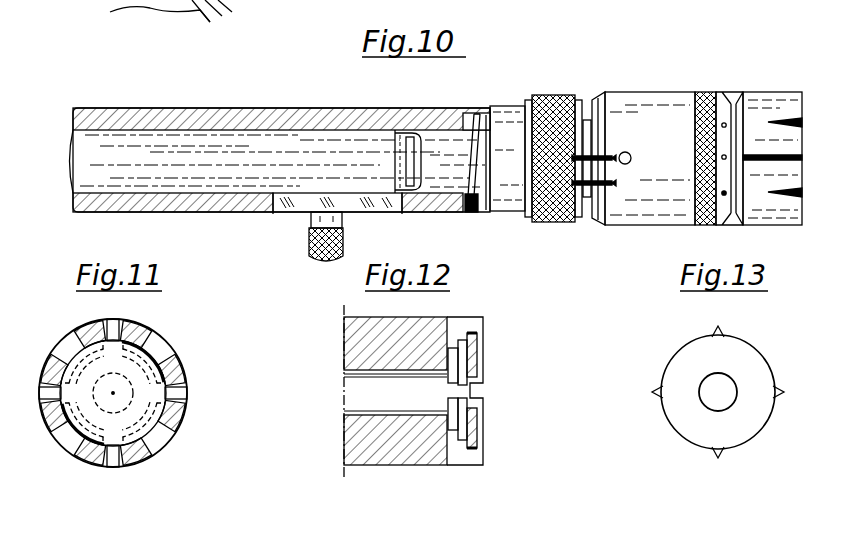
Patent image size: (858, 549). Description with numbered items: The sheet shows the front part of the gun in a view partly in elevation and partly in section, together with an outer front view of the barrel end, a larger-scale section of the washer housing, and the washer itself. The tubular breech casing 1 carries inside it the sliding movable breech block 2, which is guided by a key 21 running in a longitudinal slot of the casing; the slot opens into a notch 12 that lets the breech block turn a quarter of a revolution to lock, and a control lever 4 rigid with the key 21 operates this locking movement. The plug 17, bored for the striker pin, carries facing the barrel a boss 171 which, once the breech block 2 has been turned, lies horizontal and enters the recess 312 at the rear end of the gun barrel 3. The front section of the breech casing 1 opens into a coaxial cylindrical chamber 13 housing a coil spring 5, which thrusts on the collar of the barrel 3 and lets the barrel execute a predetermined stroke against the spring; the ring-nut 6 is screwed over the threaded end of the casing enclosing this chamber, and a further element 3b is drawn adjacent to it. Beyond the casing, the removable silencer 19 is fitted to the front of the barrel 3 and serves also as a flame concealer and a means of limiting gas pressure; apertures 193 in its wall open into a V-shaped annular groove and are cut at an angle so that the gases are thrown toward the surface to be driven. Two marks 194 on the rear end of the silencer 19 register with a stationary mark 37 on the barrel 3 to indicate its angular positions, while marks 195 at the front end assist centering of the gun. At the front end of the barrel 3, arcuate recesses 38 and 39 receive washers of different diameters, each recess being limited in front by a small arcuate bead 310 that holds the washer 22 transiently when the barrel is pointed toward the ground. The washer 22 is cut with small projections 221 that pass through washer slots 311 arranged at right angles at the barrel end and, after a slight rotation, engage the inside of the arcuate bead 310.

In FIG. 10, the tubular breech casing 1 is at (142, 130).
In FIG. 10, the movable breech block 2 is at (90, 168).
In FIG. 10, the notch 12 is at (336, 214).
In FIG. 10, the key 21 is at (350, 206).
In FIG. 10, the control lever 4 is at (309, 248).
In FIG. 10, the plug 17 is at (405, 138).
In FIG. 10, the boss 171 is at (414, 150).
In FIG. 10, the gun barrel 3 is at (443, 135).
In FIG. 10, the coaxial cylindrical chamber 13 is at (476, 116).
In FIG. 10, the recess 312 is at (415, 190).
In FIG. 10, the coil spring 5 is at (471, 206).
In FIG. 10, the ring-nut 6 is at (552, 96).
In FIG. 10, the spindle end plate 3b is at (587, 120).
In FIG. 10, the stationary mark 37 is at (592, 190).
In FIG. 10, the marks 194 is at (600, 186).
In FIG. 10, the removable silencer 19 is at (664, 206).
In FIG. 10, the apertures 193 is at (727, 200).
In FIG. 10, the marks 195 is at (793, 122).
In FIG. 11, the arcuate bead 310 is at (160, 420).
In FIG. 12, the arcuate bead 310 is at (477, 334).
In FIG. 11, the washer slots 311 is at (128, 338).
In FIG. 12, the washer slots 311 is at (466, 462).
In FIG. 11, the projections 221 is at (80, 350).
In FIG. 13, the projections 221 is at (660, 378).
In FIG. 11, the washer 22 is at (165, 382).
In FIG. 12, the washer 22 is at (472, 420).
In FIG. 13, the washer 22 is at (742, 398).
In FIG. 12, the arcuate recess 38 is at (453, 350).
In FIG. 12, the arcuate recess 39 is at (470, 366).